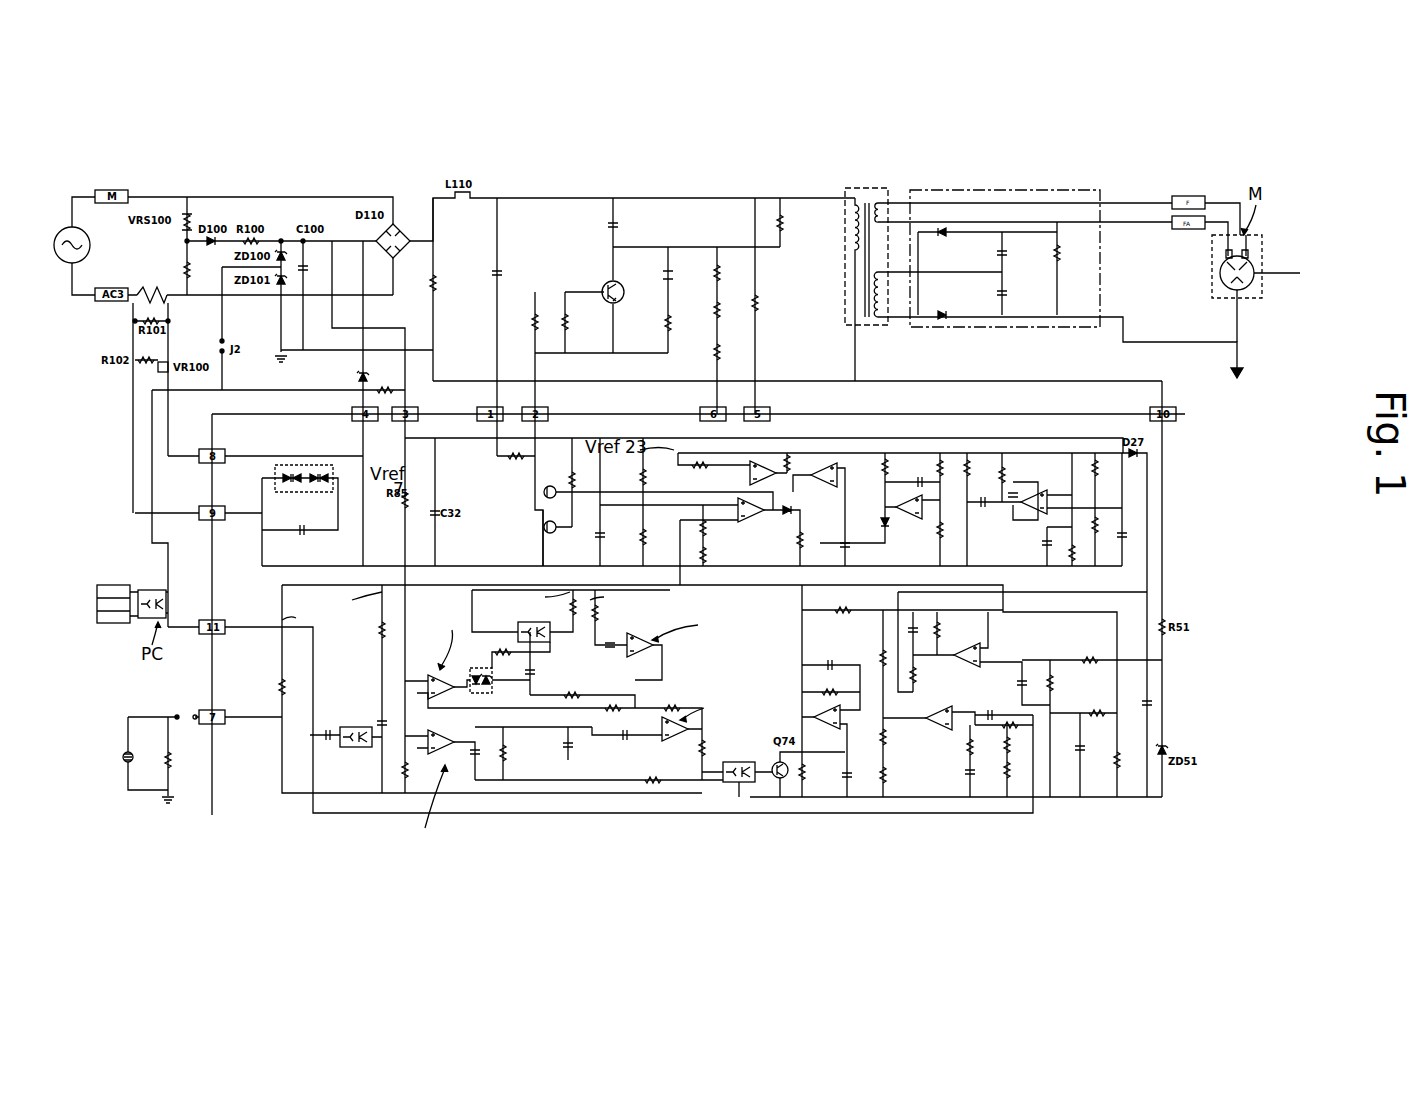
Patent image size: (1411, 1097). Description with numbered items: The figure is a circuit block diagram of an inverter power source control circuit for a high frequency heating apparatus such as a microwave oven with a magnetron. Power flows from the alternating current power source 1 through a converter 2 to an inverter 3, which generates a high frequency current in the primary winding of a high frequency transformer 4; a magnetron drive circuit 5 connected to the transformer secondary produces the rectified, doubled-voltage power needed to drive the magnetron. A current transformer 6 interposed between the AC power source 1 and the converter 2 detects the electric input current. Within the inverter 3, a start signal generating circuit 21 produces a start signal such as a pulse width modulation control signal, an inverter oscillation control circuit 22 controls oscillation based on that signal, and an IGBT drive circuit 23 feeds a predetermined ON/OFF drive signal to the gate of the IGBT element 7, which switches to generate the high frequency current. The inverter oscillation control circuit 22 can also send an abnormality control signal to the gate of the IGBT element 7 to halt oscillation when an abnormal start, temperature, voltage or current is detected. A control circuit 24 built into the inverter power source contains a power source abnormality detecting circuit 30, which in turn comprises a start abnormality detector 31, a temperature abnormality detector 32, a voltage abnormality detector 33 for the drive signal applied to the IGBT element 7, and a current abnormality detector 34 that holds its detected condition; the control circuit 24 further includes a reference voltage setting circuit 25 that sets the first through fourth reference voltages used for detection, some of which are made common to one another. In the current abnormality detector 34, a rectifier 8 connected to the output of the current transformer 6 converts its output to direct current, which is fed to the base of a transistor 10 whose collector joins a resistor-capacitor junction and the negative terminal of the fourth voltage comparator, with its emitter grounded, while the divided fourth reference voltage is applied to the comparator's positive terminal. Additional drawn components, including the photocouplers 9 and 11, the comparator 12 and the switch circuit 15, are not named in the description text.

The alternating current power source 1 is at (68, 230).
The converter 2 is at (402, 222).
The inverter 3 is at (555, 194).
The high frequency transformer 4 is at (888, 190).
The magnetron drive circuit 5 is at (986, 190).
The current transformer 6 is at (150, 288).
The IGBT element 7 is at (628, 305).
The rectifier 8 is at (318, 465).
The photocoupler 9 is at (369, 719).
The transistor 10 is at (516, 630).
The photocoupler 11 is at (722, 793).
The comparator 12 is at (814, 709).
The switch and lamp circuit 15 is at (123, 790).
The start signal generating circuit 21 is at (117, 565).
The inverter oscillation control circuit 22 is at (840, 799).
The IGBT drive circuit 23 is at (528, 520).
The control circuit 24 is at (1165, 536).
The reference voltage setting circuit 25 is at (348, 385).
The power source abnormality detecting circuit 30 is at (556, 816).
The start abnormality detector 31 is at (404, 673).
The temperature abnormality detector 32 is at (703, 717).
The voltage abnormality detector 33 is at (390, 767).
The current abnormality detector 34 is at (683, 655).